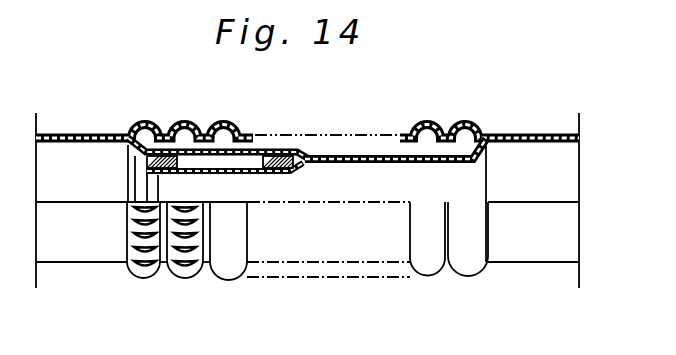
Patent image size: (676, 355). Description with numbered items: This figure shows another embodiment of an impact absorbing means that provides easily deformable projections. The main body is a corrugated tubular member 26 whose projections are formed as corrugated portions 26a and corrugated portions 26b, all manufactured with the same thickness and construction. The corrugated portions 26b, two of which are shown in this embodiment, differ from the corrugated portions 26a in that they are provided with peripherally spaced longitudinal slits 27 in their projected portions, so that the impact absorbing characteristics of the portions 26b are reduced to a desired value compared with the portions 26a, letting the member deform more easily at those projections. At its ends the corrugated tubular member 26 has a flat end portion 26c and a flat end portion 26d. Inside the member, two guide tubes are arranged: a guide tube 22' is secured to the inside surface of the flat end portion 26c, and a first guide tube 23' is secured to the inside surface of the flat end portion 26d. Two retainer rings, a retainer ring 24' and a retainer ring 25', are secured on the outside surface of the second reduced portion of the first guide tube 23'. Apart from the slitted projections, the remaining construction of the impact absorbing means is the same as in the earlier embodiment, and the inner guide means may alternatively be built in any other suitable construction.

The corrugated tubular member 26 is at (76, 130).
The guide tube 22' is at (218, 123).
The first guide tube 23' is at (395, 123).
The retainer ring 24' is at (223, 178).
The retainer ring 25' is at (292, 178).
The corrugated portions 26a is at (228, 280).
The corrugated portions 26b is at (178, 273).
The flat end portion 26c is at (60, 263).
The flat end portion 26d is at (531, 263).
The longitudinal slits 27 is at (142, 265).